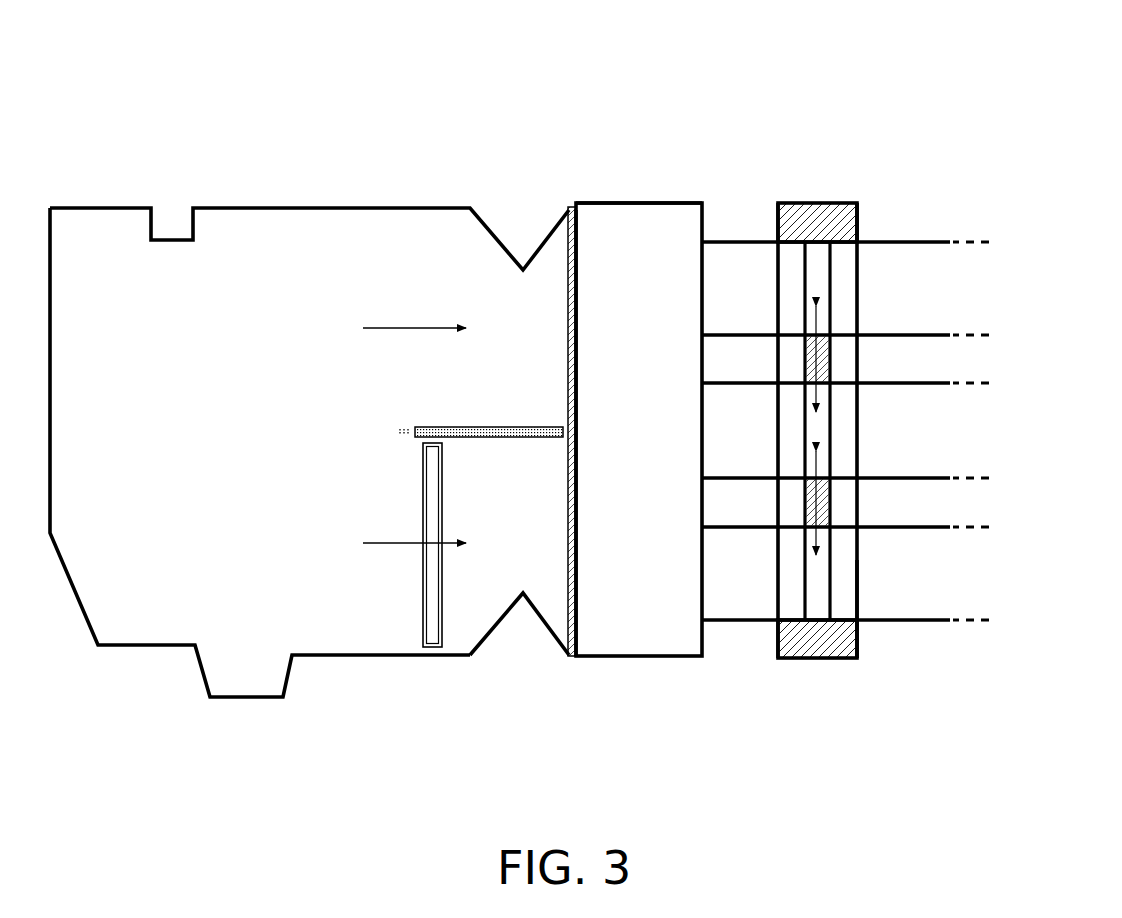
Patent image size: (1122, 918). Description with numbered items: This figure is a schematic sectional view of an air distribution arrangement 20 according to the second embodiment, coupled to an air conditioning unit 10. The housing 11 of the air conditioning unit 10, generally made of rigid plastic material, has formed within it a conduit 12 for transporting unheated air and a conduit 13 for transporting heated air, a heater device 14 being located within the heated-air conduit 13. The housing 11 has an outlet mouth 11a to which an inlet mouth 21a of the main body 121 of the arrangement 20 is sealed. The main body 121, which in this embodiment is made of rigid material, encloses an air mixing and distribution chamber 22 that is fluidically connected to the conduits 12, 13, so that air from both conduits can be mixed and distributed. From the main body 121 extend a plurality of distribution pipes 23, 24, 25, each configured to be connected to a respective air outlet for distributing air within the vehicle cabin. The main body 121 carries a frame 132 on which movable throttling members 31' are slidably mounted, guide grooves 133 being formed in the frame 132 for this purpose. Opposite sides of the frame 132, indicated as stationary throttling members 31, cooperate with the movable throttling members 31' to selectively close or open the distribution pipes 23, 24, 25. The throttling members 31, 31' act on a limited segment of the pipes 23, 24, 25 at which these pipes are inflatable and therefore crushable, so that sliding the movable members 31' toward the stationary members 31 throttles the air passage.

The air conditioning unit 10 is at (309, 404).
The housing 11 is at (133, 648).
The conduit for transporting unheated air 12 is at (417, 226).
The outlet mouth 11a is at (580, 228).
The conduit for transporting heated air 13 is at (483, 620).
The heater device 14 is at (432, 648).
The main body 121 is at (650, 200).
The inlet mouth 21a is at (566, 615).
The air mixing and distribution chamber 22 is at (603, 409).
The distribution pipe 23 is at (740, 240).
The distribution pipe 24 is at (938, 484).
The distribution pipe 25 is at (933, 624).
The air distribution arrangement 20 is at (920, 394).
The frame 132 is at (866, 223).
The guide grooves 133 is at (808, 580).
The stationary throttling members 31 is at (817, 434).
The movable throttling members 31' is at (934, 431).